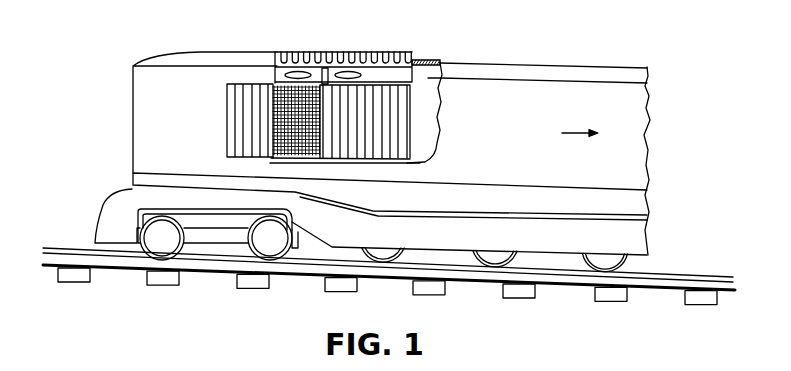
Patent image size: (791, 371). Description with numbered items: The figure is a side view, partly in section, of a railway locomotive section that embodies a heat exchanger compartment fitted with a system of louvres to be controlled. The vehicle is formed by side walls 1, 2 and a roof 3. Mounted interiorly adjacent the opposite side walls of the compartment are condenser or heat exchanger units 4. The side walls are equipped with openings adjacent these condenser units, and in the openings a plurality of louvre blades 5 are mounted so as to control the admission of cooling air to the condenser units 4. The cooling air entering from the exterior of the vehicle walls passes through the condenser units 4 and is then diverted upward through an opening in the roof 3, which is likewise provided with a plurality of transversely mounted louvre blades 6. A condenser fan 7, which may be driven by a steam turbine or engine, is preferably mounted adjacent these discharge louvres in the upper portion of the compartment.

The side wall 1 is at (620, 118).
The side wall 2 is at (440, 63).
The roof 3 is at (536, 63).
The condenser or heat exchanger units 4 is at (284, 63).
The louvre blades 5 is at (407, 133).
The louvre blades 6 is at (357, 58).
The condenser fan 7 is at (300, 72).